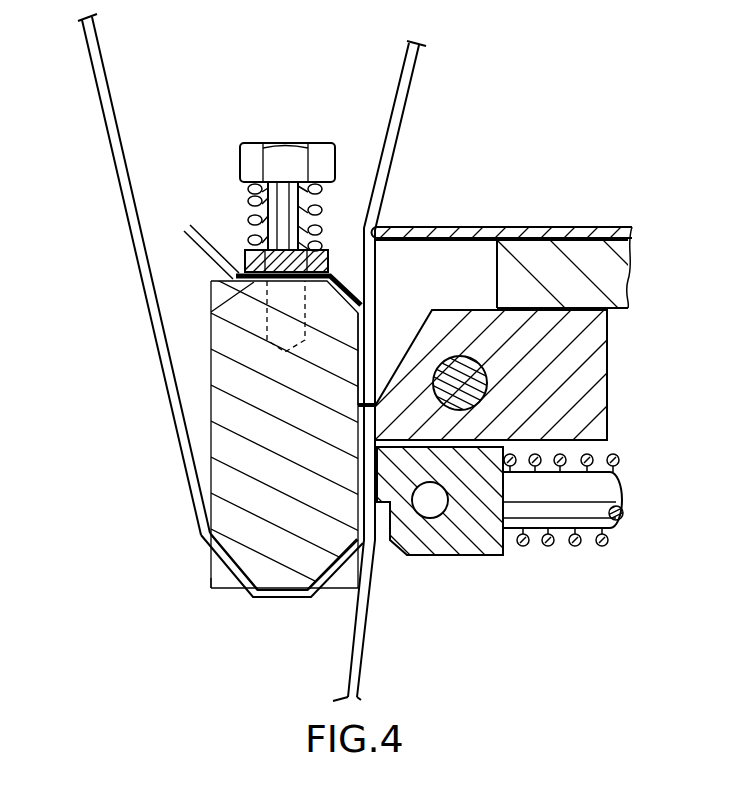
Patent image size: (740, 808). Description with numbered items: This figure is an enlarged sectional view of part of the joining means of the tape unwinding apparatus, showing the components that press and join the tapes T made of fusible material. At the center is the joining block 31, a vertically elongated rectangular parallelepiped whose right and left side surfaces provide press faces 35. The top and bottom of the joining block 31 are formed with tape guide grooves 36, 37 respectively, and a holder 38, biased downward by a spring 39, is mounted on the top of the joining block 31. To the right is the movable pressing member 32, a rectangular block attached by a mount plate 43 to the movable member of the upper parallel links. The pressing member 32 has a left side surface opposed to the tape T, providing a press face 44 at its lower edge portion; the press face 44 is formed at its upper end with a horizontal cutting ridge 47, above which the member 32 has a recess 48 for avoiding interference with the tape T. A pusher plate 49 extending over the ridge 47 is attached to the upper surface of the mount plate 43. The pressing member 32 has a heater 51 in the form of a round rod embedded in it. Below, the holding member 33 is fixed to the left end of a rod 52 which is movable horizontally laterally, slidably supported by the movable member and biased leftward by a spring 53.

The tape T is at (103, 97).
The joining block 31 is at (265, 565).
The movable pressing member 32 is at (597, 370).
The holding member 33 is at (463, 547).
The press face 35 is at (208, 385).
The tape guide groove 36 is at (222, 285).
The tape guide groove 37 is at (212, 589).
The holder 38 is at (245, 258).
The spring 39 is at (250, 227).
The mount plate 43 is at (563, 267).
The press face 44 is at (370, 423).
The cutting ridge 47 is at (357, 405).
The recess 48 is at (413, 353).
The pusher plate 49 is at (473, 227).
The heater 51 is at (473, 382).
The rod 52 is at (590, 507).
The spring 53 is at (547, 547).